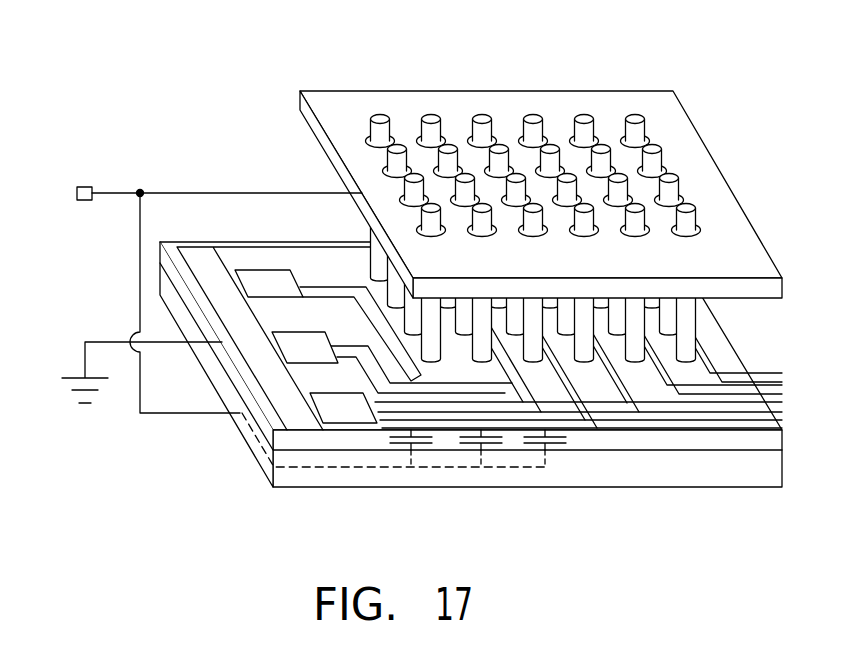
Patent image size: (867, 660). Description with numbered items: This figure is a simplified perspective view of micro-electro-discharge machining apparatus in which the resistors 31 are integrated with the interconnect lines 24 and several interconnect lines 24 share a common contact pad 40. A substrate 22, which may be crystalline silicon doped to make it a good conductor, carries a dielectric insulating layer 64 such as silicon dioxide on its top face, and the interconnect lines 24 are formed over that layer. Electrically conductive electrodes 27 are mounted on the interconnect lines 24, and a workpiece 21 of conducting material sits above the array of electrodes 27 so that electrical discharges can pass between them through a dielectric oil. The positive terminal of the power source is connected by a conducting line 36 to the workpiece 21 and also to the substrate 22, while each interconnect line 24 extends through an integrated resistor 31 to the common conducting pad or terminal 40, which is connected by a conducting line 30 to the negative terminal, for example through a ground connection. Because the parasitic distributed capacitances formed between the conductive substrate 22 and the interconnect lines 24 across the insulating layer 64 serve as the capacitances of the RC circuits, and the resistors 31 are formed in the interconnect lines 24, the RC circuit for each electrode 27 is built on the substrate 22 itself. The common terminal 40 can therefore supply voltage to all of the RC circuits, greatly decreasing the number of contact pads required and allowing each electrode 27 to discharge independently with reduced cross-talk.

The workpiece 21 is at (653, 102).
The electrodes 27 is at (562, 197).
The interconnect lines 24 is at (773, 398).
The resistors 31 is at (352, 391).
The conducting line 30 is at (105, 340).
The conducting line 36 is at (183, 192).
The common conducting pad 40 is at (253, 356).
The dielectric insulating layer 64 is at (783, 442).
The substrate 22 is at (783, 474).